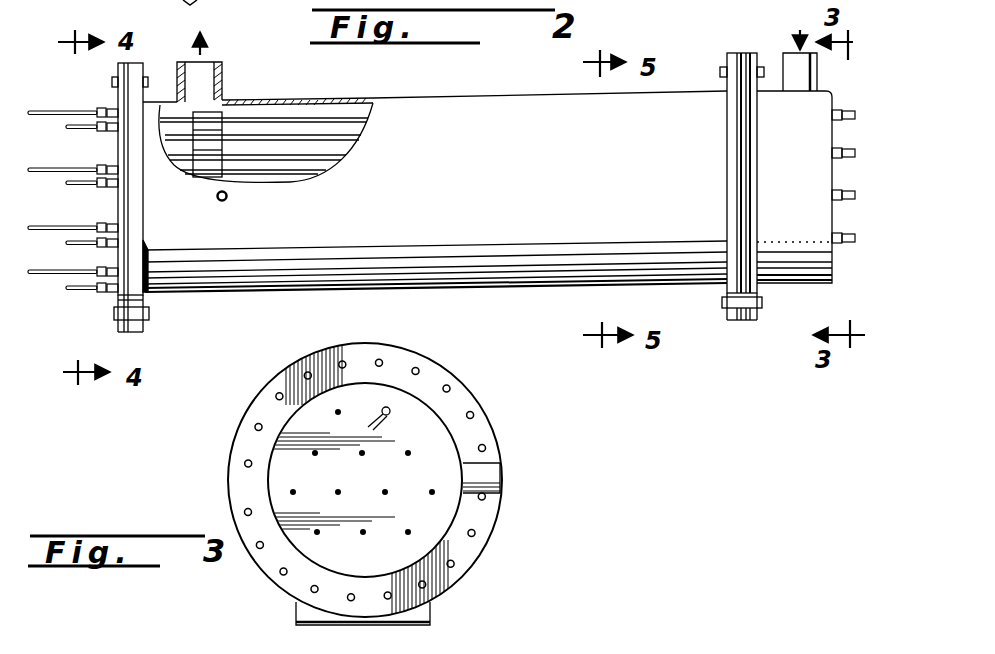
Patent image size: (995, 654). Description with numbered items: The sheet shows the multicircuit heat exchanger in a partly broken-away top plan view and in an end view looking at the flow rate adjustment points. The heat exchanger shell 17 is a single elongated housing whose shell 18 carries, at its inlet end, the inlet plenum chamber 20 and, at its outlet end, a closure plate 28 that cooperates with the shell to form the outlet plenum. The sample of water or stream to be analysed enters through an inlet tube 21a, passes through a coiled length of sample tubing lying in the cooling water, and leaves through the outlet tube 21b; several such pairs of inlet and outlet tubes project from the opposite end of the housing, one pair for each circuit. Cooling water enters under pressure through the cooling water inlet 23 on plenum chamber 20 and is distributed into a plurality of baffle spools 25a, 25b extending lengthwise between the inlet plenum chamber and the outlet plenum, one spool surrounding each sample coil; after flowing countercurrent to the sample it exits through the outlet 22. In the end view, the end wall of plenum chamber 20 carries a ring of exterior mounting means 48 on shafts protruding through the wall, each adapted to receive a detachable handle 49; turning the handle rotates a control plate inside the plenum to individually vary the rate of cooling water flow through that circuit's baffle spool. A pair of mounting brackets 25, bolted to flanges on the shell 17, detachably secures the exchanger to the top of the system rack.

In FIG. 2, the heat exchanger shell 17 is at (367, 93).
In FIG. 2, the shell 18 is at (439, 95).
In FIG. 2, the plenum chamber 20 is at (798, 236).
In FIG. 3, the plenum chamber 20 is at (423, 394).
In FIG. 2, the inlet tube 21a is at (46, 110).
In FIG. 2, the outlet tube 21b is at (82, 131).
In FIG. 2, the outlet 22 is at (222, 78).
In FIG. 2, the cooling water inlet 23 is at (783, 60).
In FIG. 3, the cooling water inlet 23 is at (490, 470).
In FIG. 3, the mounting bracket 25 is at (430, 622).
In FIG. 2, the baffle spool 25a is at (350, 124).
In FIG. 2, the baffle spool 25b is at (340, 150).
In FIG. 2, the closure plate 28 is at (223, 170).
In FIG. 2, the exterior mounting means 48 is at (850, 200).
In FIG. 3, the handle 49 is at (396, 422).